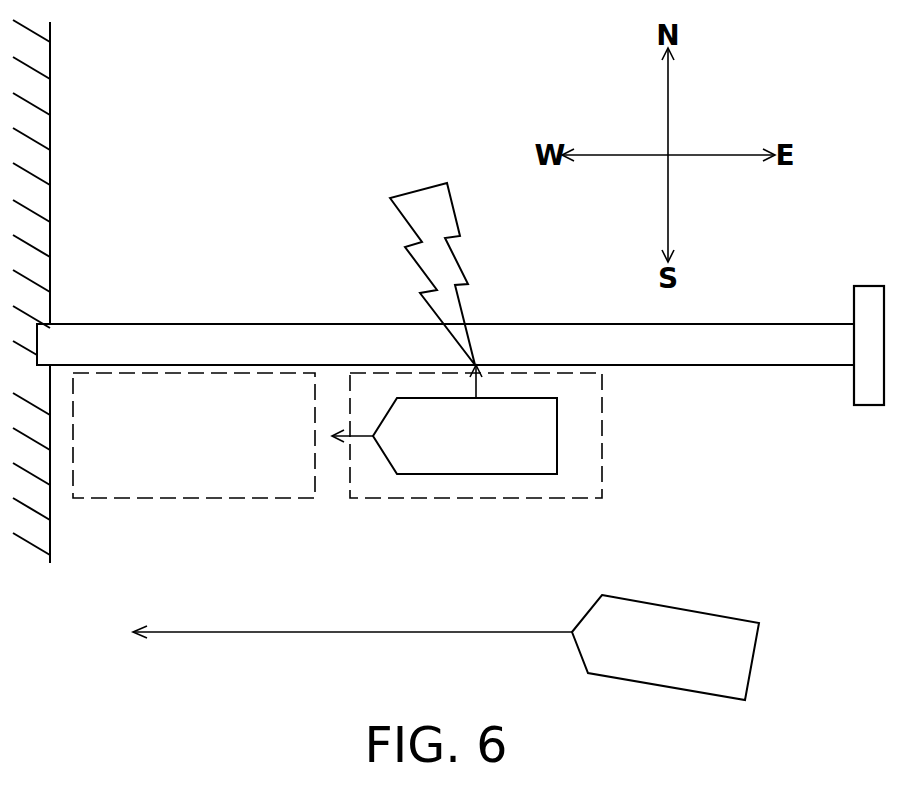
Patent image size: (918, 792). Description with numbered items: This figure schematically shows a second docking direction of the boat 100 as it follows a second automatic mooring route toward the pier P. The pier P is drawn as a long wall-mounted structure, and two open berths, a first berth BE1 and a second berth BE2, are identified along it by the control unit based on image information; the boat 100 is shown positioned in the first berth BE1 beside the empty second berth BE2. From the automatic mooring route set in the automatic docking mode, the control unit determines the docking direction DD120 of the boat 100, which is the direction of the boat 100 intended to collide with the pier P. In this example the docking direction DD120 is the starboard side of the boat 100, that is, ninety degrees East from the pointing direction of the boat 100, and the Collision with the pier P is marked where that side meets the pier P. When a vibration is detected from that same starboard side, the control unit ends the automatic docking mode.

The boat 100 is at (566, 549).
The pier P is at (802, 324).
The first berth BE1 is at (476, 435).
The second berth BE2 is at (194, 435).
The docking direction DD120 is at (472, 366).
The collision event Collision is at (422, 256).